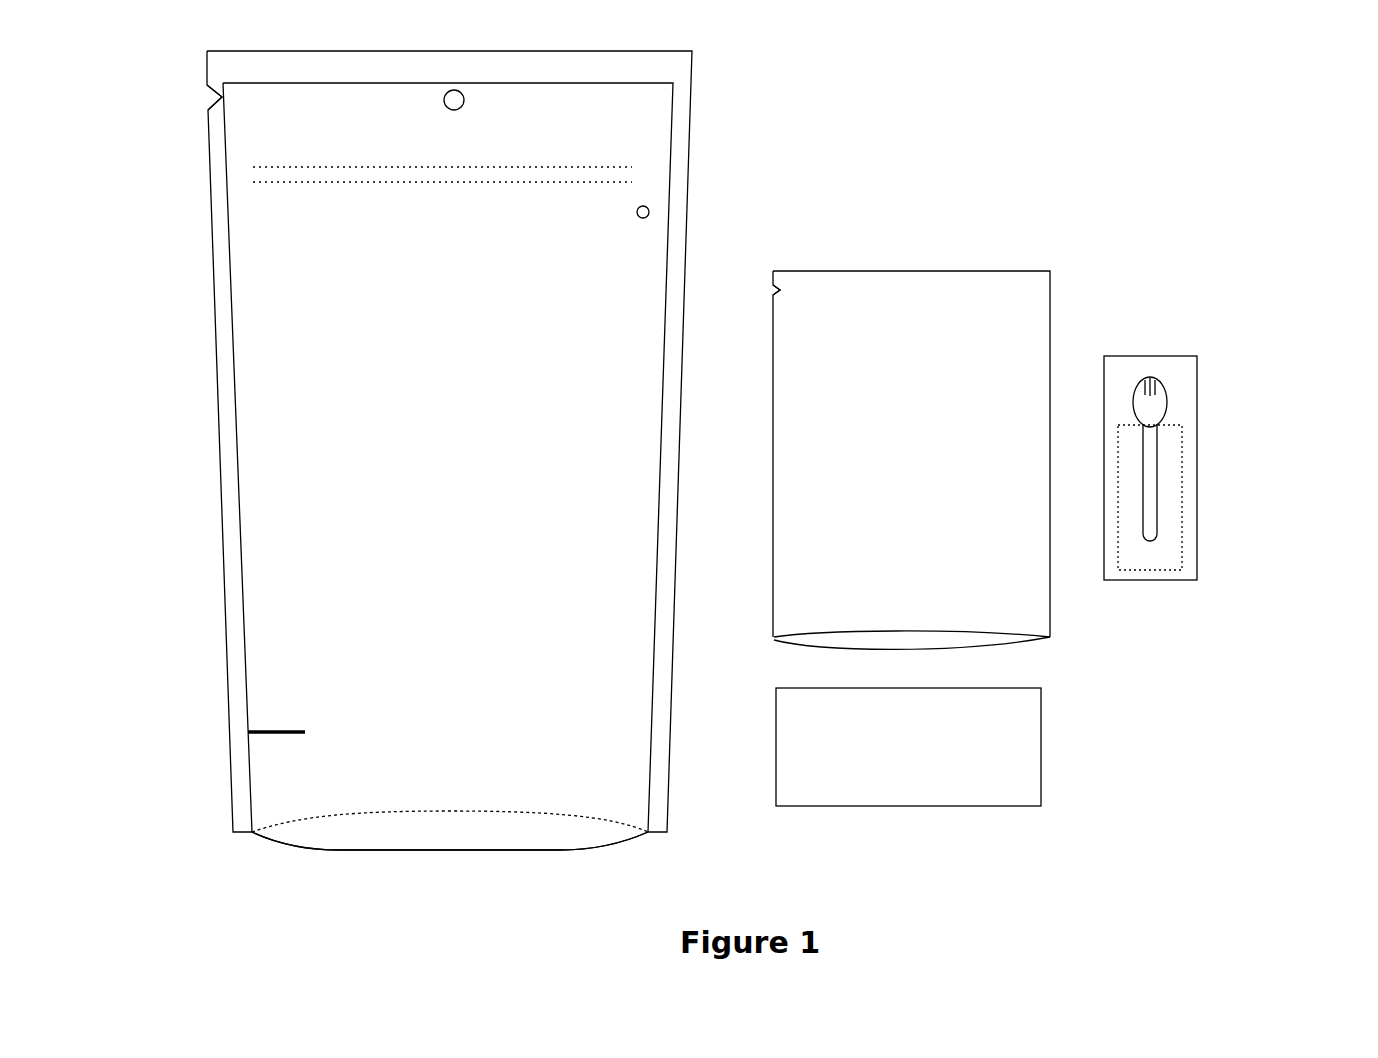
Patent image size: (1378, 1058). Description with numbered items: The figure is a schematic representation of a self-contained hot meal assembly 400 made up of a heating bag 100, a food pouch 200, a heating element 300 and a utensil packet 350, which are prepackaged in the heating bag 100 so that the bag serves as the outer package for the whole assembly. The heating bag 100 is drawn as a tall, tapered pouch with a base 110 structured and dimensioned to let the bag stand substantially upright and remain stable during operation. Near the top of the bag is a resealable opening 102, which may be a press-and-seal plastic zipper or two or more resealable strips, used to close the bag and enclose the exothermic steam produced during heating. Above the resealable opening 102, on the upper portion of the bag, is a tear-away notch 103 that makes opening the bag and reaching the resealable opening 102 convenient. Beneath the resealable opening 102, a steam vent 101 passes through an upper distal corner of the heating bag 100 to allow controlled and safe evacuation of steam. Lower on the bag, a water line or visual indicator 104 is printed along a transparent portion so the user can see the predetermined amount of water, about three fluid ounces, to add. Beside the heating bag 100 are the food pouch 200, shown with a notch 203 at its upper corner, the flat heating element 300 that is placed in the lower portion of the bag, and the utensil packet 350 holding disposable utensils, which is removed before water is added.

The heating bag 100 is at (226, 602).
The steam vent 101 is at (644, 220).
The resealable opening 102 is at (260, 178).
The tear-away notch 103 is at (207, 111).
The water line or visual indicator 104 is at (262, 736).
The base 110 is at (452, 852).
The food pouch 200 is at (952, 271).
The tear notch of food package 203 is at (770, 284).
The heating element 300 is at (1037, 758).
The utensil packet 350 is at (1193, 540).
The self-contained hot meal assembly 400 is at (1208, 121).